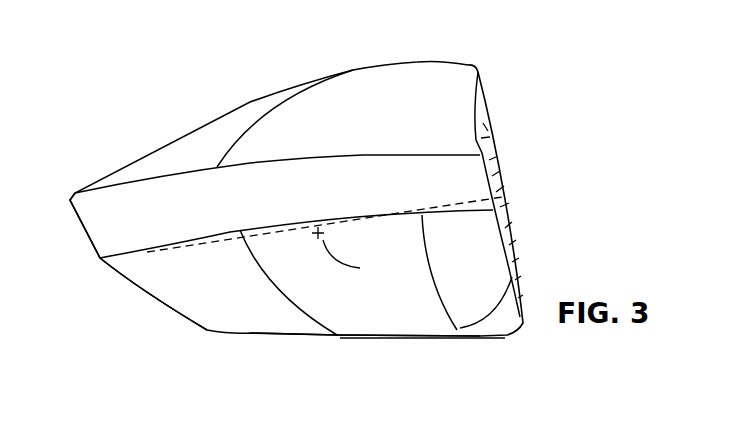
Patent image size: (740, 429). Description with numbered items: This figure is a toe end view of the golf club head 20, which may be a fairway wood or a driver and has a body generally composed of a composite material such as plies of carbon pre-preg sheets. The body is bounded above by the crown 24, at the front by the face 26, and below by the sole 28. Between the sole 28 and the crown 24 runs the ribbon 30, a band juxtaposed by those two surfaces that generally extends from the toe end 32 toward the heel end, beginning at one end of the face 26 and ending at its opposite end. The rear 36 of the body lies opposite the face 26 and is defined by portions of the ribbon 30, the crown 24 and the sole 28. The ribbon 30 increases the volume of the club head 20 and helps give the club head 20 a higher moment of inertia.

The golf club head 20 is at (518, 98).
The crown 24 is at (213, 117).
The face 26 is at (503, 178).
The sole 28 is at (170, 298).
The ribbon 30 is at (93, 220).
The toe end 32 is at (338, 351).
The rear 36 is at (48, 200).